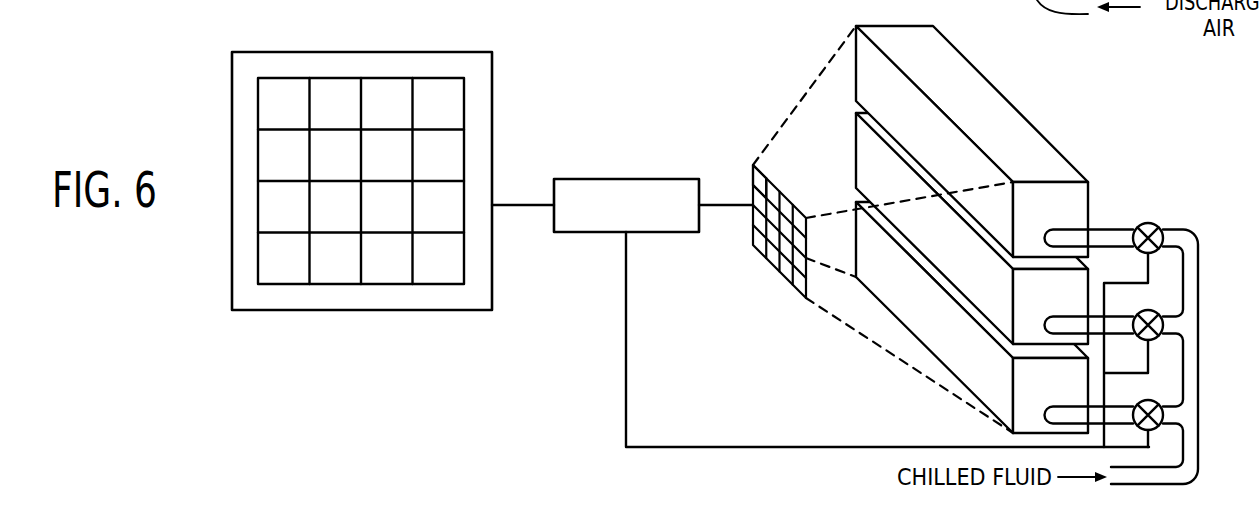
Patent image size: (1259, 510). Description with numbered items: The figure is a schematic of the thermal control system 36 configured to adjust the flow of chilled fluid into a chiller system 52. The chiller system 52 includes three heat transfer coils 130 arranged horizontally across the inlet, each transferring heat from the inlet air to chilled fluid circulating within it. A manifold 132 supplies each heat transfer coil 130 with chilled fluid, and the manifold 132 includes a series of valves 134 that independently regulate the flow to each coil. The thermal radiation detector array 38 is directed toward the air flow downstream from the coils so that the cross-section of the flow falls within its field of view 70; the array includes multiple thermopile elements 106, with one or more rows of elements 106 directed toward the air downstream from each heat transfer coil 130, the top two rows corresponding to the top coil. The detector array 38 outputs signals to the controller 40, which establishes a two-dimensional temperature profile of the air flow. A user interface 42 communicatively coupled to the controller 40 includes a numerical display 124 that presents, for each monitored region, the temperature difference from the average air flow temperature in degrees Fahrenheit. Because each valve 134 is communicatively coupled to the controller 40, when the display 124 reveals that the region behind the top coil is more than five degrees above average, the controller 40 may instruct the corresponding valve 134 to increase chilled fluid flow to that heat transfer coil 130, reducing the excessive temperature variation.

The thermal control system 36 is at (595, 104).
The thermal radiation detector array 38 is at (783, 275).
The controller 40 is at (627, 178).
The user interface 42 is at (492, 94).
The chiller system 52 is at (1007, 229).
The field of view 70 is at (805, 96).
The thermopile elements 106 is at (760, 180).
The numerical display 124 is at (258, 97).
The heat transfer coils 130 is at (1088, 200).
The manifold 132 is at (1199, 330).
The valves 134 is at (1158, 226).